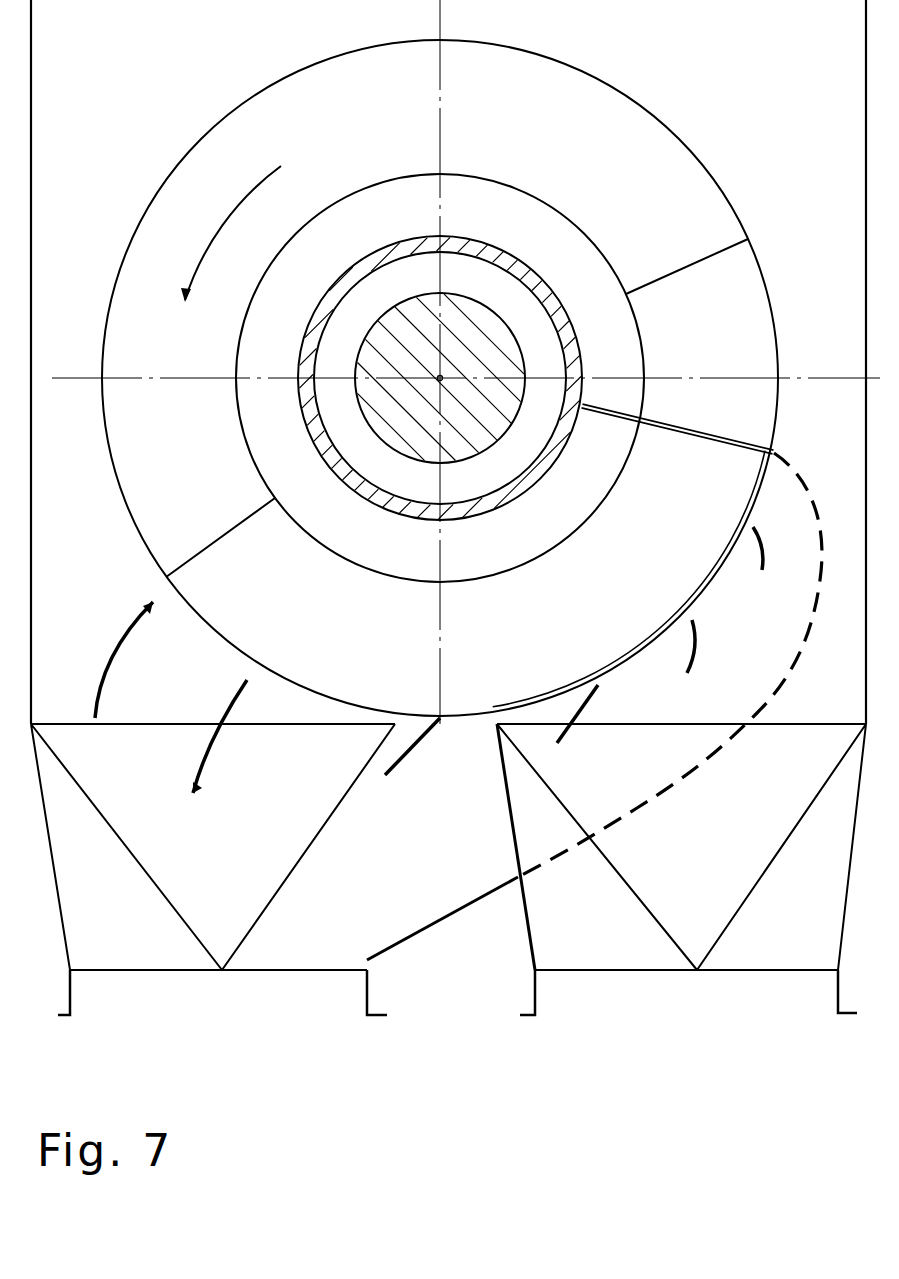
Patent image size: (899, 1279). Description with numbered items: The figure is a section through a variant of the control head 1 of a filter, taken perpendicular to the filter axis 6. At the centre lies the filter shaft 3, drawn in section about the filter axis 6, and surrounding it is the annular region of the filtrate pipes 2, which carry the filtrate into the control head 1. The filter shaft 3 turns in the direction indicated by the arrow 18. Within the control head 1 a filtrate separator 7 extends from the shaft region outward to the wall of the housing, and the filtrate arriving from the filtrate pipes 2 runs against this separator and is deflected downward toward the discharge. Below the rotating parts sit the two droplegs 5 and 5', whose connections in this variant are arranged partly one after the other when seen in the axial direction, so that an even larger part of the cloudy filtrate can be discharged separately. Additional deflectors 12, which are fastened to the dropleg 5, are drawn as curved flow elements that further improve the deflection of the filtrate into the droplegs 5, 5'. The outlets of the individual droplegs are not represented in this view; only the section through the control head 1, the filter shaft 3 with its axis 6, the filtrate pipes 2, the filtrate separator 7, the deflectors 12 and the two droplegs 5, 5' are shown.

The control head 1 is at (109, 23).
The filtrate pipes 2 is at (255, 570).
The filter shaft 3 is at (457, 445).
The dropleg 5 is at (274, 869).
The dropleg 5' is at (674, 869).
The filter axis 6 is at (438, 382).
The filtrate separator 7 is at (692, 427).
The additional deflectors 12 is at (105, 672).
The arrow 18 is at (222, 222).